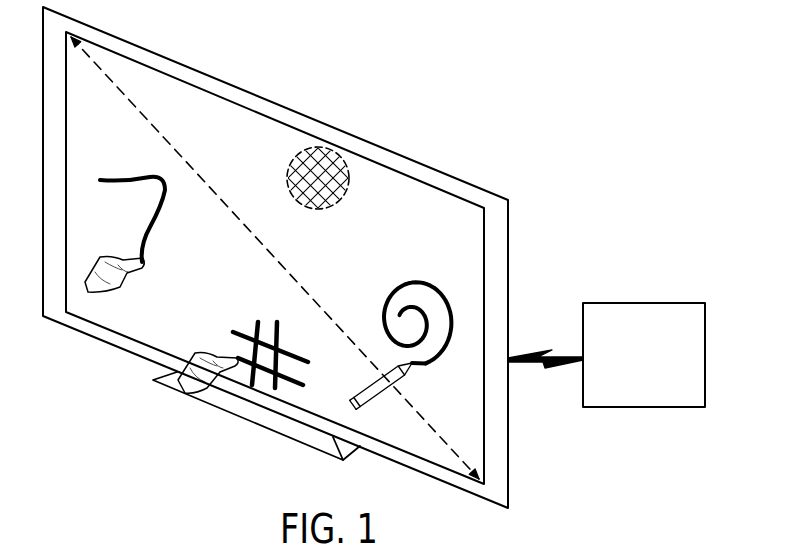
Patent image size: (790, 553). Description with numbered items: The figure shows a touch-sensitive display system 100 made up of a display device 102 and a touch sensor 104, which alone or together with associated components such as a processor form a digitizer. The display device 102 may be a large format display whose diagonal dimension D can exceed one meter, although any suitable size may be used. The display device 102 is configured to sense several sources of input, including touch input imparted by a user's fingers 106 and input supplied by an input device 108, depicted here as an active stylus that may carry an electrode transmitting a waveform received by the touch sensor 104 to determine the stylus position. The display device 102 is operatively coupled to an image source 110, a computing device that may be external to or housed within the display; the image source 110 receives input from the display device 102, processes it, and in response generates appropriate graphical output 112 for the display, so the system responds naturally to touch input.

The touch-sensitive display system 100 is at (374, 257).
The display device 102 is at (163, 67).
The touch sensor 104 is at (338, 158).
The fingers 106 is at (141, 263).
The input device 108 is at (358, 404).
The image source 110 is at (628, 391).
The graphical output 112 is at (138, 177).
The diagonal dimension D is at (275, 258).